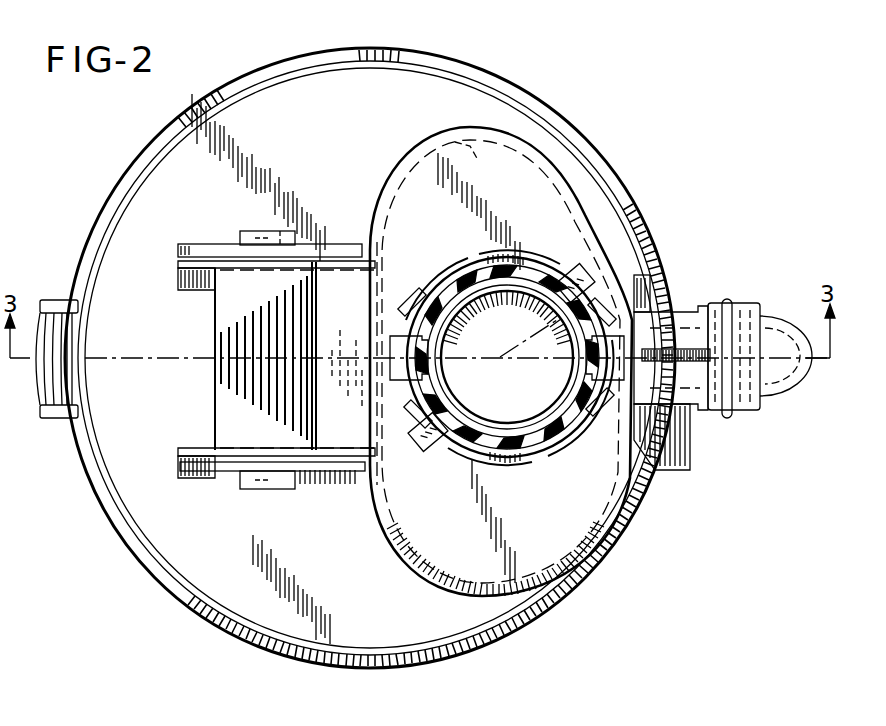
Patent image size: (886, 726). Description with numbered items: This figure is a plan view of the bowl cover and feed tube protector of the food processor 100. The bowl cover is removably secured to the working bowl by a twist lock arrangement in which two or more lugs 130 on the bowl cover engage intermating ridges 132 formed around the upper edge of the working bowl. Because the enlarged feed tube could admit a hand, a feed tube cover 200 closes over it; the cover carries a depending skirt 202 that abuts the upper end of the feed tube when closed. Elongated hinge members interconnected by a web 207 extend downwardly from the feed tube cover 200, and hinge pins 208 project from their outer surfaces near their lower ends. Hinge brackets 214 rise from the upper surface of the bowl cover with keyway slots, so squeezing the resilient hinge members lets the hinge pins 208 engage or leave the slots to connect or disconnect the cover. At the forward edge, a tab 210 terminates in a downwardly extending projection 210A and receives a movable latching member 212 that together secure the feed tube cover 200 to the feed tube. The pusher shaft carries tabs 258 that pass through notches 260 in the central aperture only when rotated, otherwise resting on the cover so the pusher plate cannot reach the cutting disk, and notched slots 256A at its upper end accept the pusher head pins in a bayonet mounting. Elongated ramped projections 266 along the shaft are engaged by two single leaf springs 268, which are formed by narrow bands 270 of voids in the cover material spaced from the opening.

The food processor 100 is at (92, 190).
The lugs 130 is at (38, 322).
The intermating ridges 132 is at (60, 390).
The feed tube cover 200 is at (560, 180).
The depending skirt 202 is at (480, 150).
The web 207 is at (226, 296).
The hinge pins 208 is at (270, 240).
The hinge brackets 214 is at (327, 250).
The notches 260 is at (390, 346).
The notched slots 256A is at (532, 440).
The ramped projections 266 is at (520, 256).
The leaf springs 268 is at (438, 262).
The narrow bands 270 is at (424, 283).
The tabs 258 is at (570, 266).
The tab 210 is at (676, 312).
The movable latching member 212 is at (750, 300).
The downwardly extending projection 210A is at (810, 378).